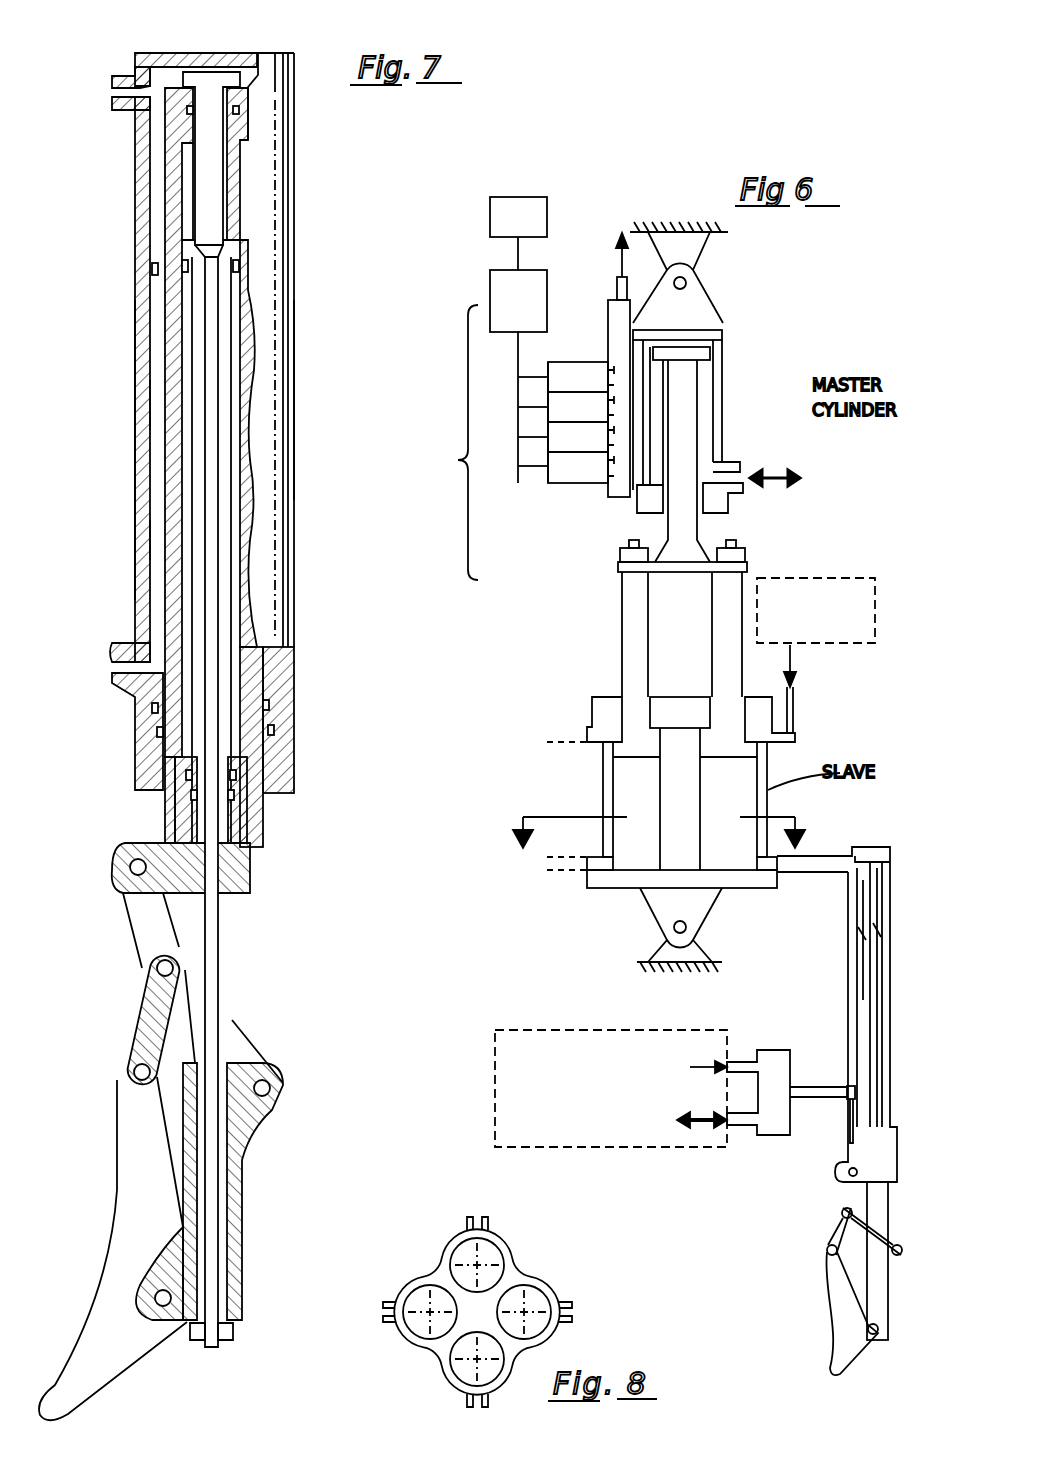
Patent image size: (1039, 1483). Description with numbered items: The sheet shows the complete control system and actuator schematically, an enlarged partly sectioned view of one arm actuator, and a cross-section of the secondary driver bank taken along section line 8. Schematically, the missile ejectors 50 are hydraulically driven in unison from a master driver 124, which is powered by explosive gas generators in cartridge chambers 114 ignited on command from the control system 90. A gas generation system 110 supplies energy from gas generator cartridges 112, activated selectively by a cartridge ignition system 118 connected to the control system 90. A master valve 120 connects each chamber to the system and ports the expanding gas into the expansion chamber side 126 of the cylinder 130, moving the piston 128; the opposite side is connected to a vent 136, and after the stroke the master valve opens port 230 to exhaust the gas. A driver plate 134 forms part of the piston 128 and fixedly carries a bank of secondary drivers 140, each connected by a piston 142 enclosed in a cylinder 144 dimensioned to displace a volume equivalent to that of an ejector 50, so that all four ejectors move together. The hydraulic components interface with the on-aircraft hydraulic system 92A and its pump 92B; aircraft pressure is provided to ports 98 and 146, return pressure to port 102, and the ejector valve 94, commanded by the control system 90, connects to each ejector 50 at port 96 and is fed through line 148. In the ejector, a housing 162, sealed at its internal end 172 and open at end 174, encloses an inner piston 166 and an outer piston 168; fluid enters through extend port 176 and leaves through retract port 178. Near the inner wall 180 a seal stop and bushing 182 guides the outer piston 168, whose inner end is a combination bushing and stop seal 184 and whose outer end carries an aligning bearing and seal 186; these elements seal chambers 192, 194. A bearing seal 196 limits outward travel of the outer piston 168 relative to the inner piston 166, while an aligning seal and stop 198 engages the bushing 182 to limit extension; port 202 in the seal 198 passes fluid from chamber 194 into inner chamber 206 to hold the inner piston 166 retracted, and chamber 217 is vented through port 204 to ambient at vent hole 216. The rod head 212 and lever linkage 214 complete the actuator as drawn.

In FIG. 6, the section line 8— 8 is at (656, 825).
In FIG. 7, the missile ejector 50 is at (295, 438).
In FIG. 6, the missile ejector 50 is at (890, 960).
In FIG. 6, the control system 90 is at (520, 205).
In FIG. 6, the on-aircraft hydraulic system 92A is at (537, 1035).
In FIG. 6, the aircraft system hydraulic pump 92B is at (837, 578).
In FIG. 6, the ejector valve 94 is at (772, 1050).
In FIG. 6, the port 96 is at (818, 1086).
In FIG. 6, the port 98 is at (733, 1062).
In FIG. 6, the return port 102 is at (735, 1135).
In FIG. 6, the gas generation system 110 is at (448, 442).
In FIG. 6, the gas generator cartridge 112 is at (548, 480).
In FIG. 6, the cartridge chamber 114 is at (581, 422).
In FIG. 6, the cartridge ignition system 118 is at (535, 318).
In FIG. 6, the master valve 120 is at (615, 500).
In FIG. 6, the master driver 124 is at (745, 445).
In FIG. 6, the expansion chamber side 126 is at (705, 340).
In FIG. 6, the piston 128 is at (681, 454).
In FIG. 6, the cylinder 130 is at (720, 462).
In FIG. 6, the driver plate 134 is at (747, 556).
In FIG. 6, the vent 136 is at (740, 493).
In FIG. 6, the secondary driver 140 is at (528, 690).
In FIG. 6, the piston 142 is at (683, 634).
In FIG. 6, the cylinder 144 is at (685, 783).
In FIG. 6, the port 146 is at (795, 730).
In FIG. 6, the hydraulic line 148 is at (830, 856).
In FIG. 7, the housing 162 is at (137, 465).
In FIG. 7, the inner piston 166 is at (213, 160).
In FIG. 7, the outer piston 168 is at (165, 330).
In FIG. 7, the internal end 172 is at (268, 62).
In FIG. 7, the open end 174 is at (268, 785).
In FIG. 7, the extend port 176 is at (112, 82).
In FIG. 7, the retract port 178 is at (112, 655).
In FIG. 6, the retract port 178 is at (845, 1098).
In FIG. 7, the inner wall 180 is at (155, 540).
In FIG. 7, the seal stop and bushing 182 is at (157, 724).
In FIG. 7, the combination bushing and stop seal 184 is at (185, 795).
In FIG. 7, the aligning bearing and seal 186 is at (172, 108).
In FIG. 7, the chamber 192 is at (158, 415).
In FIG. 7, the chamber 194 is at (155, 60).
In FIG. 7, the bearing seal 196 is at (190, 268).
In FIG. 7, the aligning seal and stop 198 is at (152, 268).
In FIG. 7, the port 202 is at (138, 222).
In FIG. 7, the port 204 is at (215, 278).
In FIG. 7, the inner chamber 206 is at (187, 493).
In FIG. 7, the rod head 212 is at (180, 80).
In FIG. 7, the lever linkage 214 is at (228, 982).
In FIG. 7, the vent hole 216 is at (217, 1340).
In FIG. 7, the chamber 217 is at (178, 205).
In FIG. 6, the port 230 is at (617, 285).